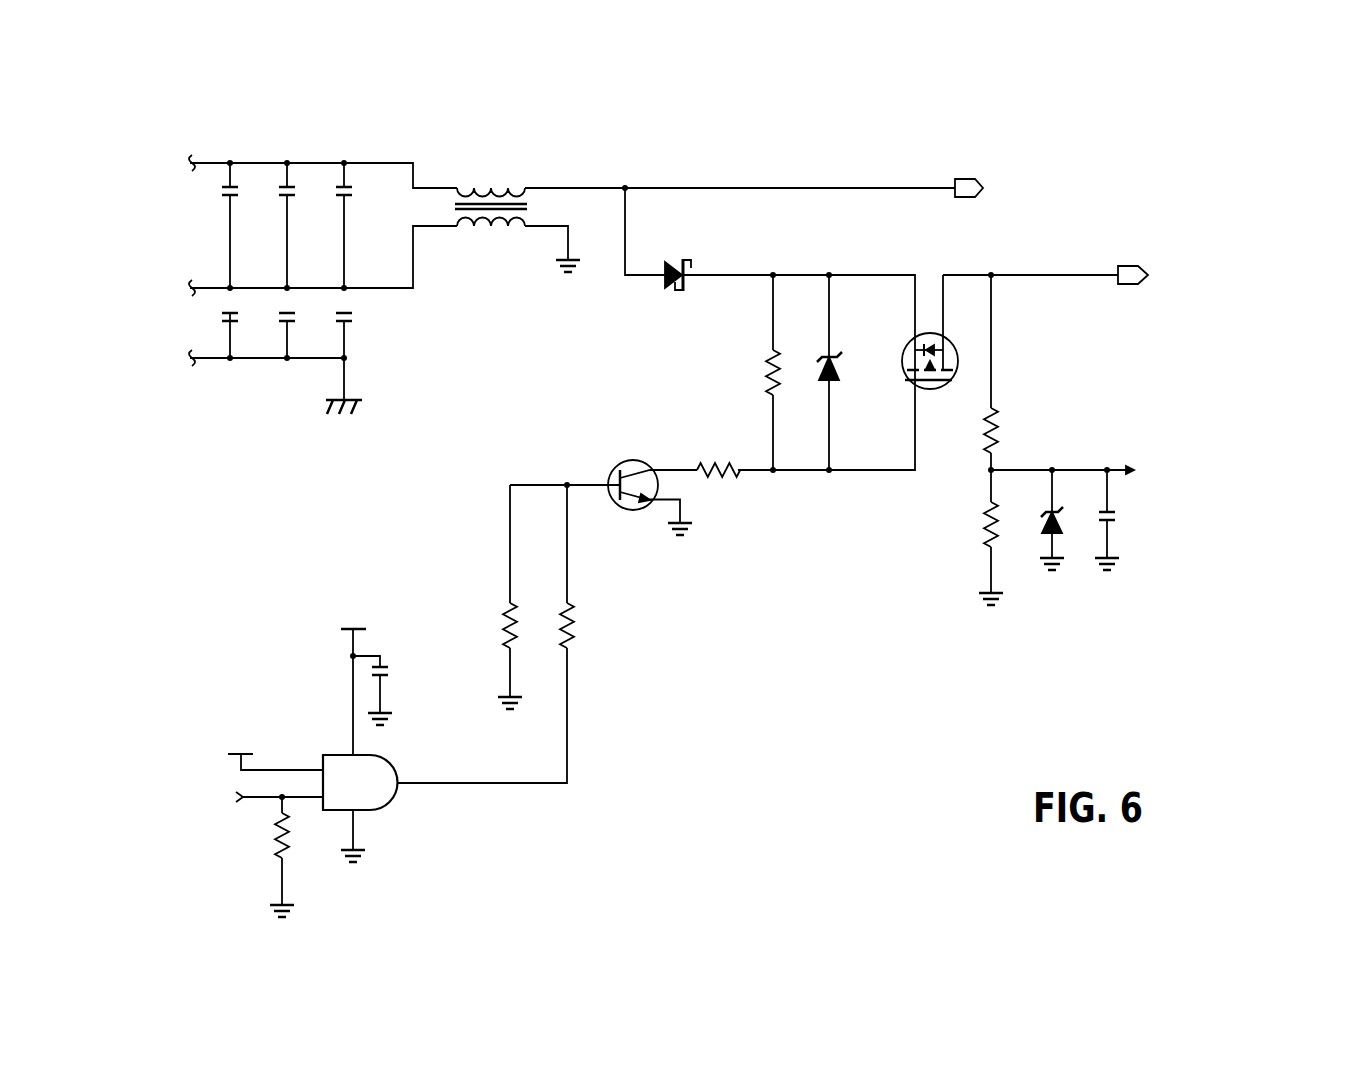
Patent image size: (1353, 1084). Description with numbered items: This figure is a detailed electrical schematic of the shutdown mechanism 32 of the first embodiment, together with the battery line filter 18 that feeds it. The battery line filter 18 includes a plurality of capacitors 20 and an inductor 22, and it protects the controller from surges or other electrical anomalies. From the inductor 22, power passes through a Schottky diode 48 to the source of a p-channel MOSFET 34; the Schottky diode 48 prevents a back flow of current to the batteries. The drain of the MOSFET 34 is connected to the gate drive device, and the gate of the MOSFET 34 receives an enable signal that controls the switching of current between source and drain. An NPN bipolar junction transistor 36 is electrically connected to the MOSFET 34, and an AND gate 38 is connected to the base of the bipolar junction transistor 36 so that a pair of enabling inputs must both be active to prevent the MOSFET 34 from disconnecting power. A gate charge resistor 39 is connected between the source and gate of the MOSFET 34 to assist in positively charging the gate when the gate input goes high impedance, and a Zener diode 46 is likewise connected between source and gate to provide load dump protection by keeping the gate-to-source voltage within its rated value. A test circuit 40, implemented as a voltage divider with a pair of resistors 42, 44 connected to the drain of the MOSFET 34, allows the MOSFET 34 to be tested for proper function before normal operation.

The battery line filter 18 is at (384, 247).
The capacitors 20 is at (356, 255).
The inductor 22 is at (498, 190).
The shutdown mechanism 32 is at (918, 273).
The MOSFET 34 is at (930, 392).
The bipolar junction transistor 36 is at (635, 510).
The AND gate 38 is at (390, 800).
The gate charge resistor 39 is at (770, 365).
The test circuit 40 is at (1112, 438).
The resistor 42 is at (993, 406).
The resistor 44 is at (983, 530).
The Zener diode 46 is at (838, 385).
The Schottky diode 48 is at (672, 260).